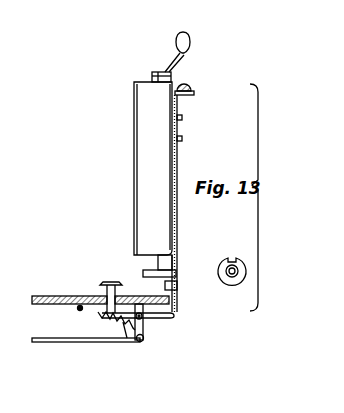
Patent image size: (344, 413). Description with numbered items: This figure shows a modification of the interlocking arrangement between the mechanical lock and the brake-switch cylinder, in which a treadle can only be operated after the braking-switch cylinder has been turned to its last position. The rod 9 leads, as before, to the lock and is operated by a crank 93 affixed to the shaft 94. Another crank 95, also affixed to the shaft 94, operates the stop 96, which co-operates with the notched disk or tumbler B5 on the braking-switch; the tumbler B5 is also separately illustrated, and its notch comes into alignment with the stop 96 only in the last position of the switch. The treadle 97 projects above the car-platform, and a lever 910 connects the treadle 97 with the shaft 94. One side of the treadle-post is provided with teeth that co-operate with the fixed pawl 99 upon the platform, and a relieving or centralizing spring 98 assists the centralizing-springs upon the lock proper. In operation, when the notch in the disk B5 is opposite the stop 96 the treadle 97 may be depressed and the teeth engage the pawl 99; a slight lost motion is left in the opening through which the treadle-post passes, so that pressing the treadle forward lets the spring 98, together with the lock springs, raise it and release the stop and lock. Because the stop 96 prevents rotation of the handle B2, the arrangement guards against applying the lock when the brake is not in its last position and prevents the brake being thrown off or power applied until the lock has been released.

The handle B2 is at (190, 46).
The notched disk or tumbler B5 is at (150, 270).
The rod 9 is at (42, 343).
The crank 93 is at (143, 320).
The shaft 94 is at (147, 323).
The crank 95 is at (160, 318).
The stop 96 is at (172, 303).
The treadle 97 is at (103, 282).
The relieving or centralizing spring 98 is at (96, 318).
The fixed pawl 99 is at (104, 298).
The lever 910 is at (122, 342).